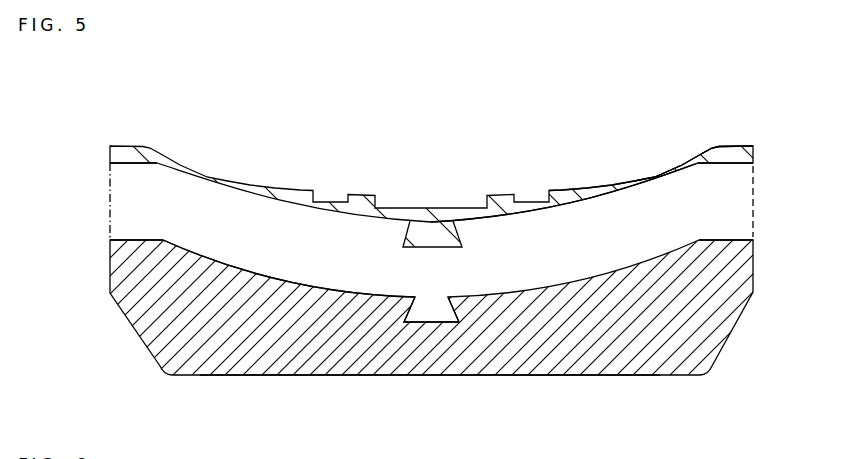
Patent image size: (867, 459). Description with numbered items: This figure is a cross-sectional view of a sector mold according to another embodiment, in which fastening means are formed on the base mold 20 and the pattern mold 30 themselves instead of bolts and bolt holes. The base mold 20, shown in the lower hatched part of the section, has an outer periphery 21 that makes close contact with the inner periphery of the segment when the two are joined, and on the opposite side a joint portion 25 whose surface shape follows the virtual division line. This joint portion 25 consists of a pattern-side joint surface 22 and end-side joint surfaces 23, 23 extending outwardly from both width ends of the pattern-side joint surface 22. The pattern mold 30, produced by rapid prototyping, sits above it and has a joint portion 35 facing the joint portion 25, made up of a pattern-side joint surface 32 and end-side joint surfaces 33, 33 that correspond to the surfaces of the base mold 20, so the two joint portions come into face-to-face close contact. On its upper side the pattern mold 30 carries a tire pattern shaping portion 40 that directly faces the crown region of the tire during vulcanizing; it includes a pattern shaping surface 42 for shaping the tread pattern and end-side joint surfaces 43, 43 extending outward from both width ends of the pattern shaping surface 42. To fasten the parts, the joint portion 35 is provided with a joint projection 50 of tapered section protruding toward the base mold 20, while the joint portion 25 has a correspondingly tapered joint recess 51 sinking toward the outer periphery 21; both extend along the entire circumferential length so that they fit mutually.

The base mold 20 is at (120, 332).
The outer periphery 21 is at (350, 375).
The pattern-side joint surface 22 is at (203, 258).
The end-side joint surfaces 23 is at (126, 240).
The joint portion 25 is at (55, 140).
The pattern mold 30 is at (173, 146).
The pattern-side joint surface 32 is at (678, 174).
The end-side joint surfaces 33 is at (753, 167).
The joint portion 35 is at (803, 123).
The tire pattern shaping portion 40 is at (721, 87).
The pattern shaping surface 42 is at (660, 170).
The end-side joint surfaces 43 is at (716, 145).
The joint projection 50 is at (462, 240).
The joint recess 51 is at (411, 313).